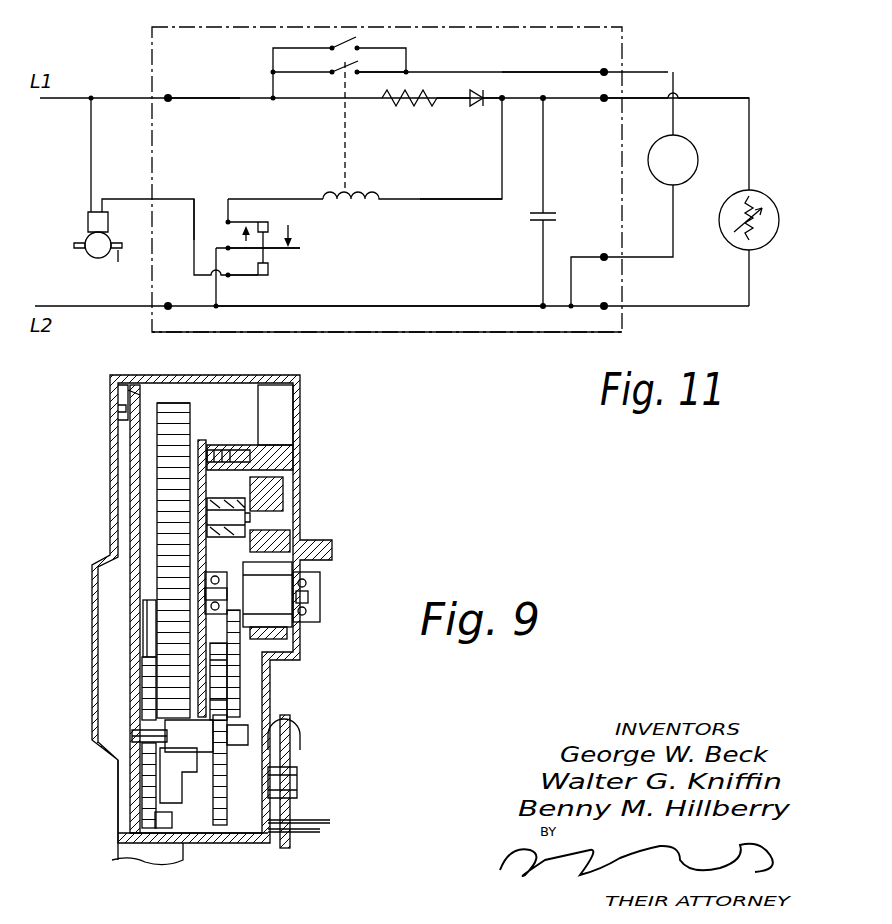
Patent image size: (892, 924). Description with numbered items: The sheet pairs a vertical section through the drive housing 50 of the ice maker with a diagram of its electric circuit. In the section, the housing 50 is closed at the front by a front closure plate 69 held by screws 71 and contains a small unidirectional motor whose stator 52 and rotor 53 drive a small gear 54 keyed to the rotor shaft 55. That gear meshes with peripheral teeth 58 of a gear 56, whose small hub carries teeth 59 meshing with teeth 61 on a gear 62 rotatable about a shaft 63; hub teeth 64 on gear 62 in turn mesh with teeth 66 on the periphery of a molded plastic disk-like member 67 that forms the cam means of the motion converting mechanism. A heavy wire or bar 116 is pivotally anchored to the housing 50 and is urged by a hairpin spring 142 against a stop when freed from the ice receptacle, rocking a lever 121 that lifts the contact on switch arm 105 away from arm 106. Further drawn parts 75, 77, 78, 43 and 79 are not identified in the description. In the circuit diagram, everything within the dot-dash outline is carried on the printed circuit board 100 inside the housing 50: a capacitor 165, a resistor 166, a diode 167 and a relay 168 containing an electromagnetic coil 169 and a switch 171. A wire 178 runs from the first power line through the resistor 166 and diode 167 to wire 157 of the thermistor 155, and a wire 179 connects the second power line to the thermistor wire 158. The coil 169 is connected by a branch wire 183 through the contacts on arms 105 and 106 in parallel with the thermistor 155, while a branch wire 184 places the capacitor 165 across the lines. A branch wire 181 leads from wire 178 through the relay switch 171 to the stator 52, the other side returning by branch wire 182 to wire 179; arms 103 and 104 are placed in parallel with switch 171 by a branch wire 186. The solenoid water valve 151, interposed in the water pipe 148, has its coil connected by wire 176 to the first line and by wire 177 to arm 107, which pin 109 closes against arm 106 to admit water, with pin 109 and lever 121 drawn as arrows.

In FIG. 11, the wire 176 is at (91, 157).
In FIG. 11, the solenoid actuated valve 151 is at (88, 230).
In FIG. 11, the pipe 148 is at (118, 262).
In FIG. 11, the wire 177 is at (194, 199).
In FIG. 11, the wire 178 is at (199, 98).
In FIG. 11, the branch wire 186 is at (273, 56).
In FIG. 11, the switch spring arm 103 is at (332, 46).
In FIG. 11, the switch spring arm 104 is at (357, 46).
In FIG. 11, the relay switch 171 is at (336, 70).
In FIG. 11, the relay 168 is at (345, 136).
In FIG. 11, the resistor 166 is at (409, 101).
In FIG. 11, the diode 167 is at (480, 106).
In FIG. 11, the electromagnetic coil 169 is at (380, 199).
In FIG. 11, the branch wire 183 is at (480, 204).
In FIG. 11, the branch wire 181 is at (540, 72).
In FIG. 11, the branch wire 184 is at (548, 141).
In FIG. 11, the capacitor 165 is at (548, 212).
In FIG. 11, the branch wire 182 is at (673, 236).
In FIG. 11, the thermistor wire 157 is at (749, 126).
In FIG. 9, the thermistor wire 157 is at (322, 831).
In FIG. 11, the thermistor 155 is at (735, 247).
In FIG. 11, the thermistor wire 158 is at (749, 297).
In FIG. 9, the thermistor wire 158 is at (306, 820).
In FIG. 11, the wire 179 is at (490, 306).
In FIG. 11, the switch spring arm 105 is at (258, 222).
In FIG. 11, the lever 121 is at (240, 241).
In FIG. 11, the pin 109 is at (288, 226).
In FIG. 11, the switch spring arm 106 is at (282, 250).
In FIG. 11, the switch spring arm 107 is at (250, 277).
In FIG. 11, the printed circuit board 100 is at (466, 332).
In FIG. 9, the housing 50 is at (300, 412).
In FIG. 9, the front closure plate 69 is at (130, 400).
In FIG. 9, the screws 71 is at (122, 410).
In FIG. 9, the disk-like member 67 is at (157, 432).
In FIG. 9, the teeth 66 is at (160, 461).
In FIG. 9, the stator 52 is at (265, 495).
In FIG. 9, the rotor 53 is at (290, 566).
In FIG. 9, the small gear 54 is at (230, 572).
In FIG. 9, the rotor shaft 55 is at (310, 598).
In FIG. 9, the hub gear teeth 59 is at (232, 640).
In FIG. 9, the gear 56 is at (236, 672).
In FIG. 9, the teeth 58 is at (232, 684).
In FIG. 9, the shaft 75 is at (150, 641).
In FIG. 9, the pinion 77 is at (150, 679).
In FIG. 9, the shaft 63 is at (160, 735).
In FIG. 9, the hairpin spring 142 is at (276, 730).
In FIG. 9, the gear 78 is at (145, 776).
In FIG. 9, the switch 43 is at (296, 772).
In FIG. 9, the hub teeth 64 is at (205, 762).
In FIG. 9, the teeth 61 is at (220, 778).
In FIG. 9, the gear 62 is at (228, 822).
In FIG. 9, the wire or bar 116 is at (285, 852).
In FIG. 9, the base plate 79 is at (175, 842).